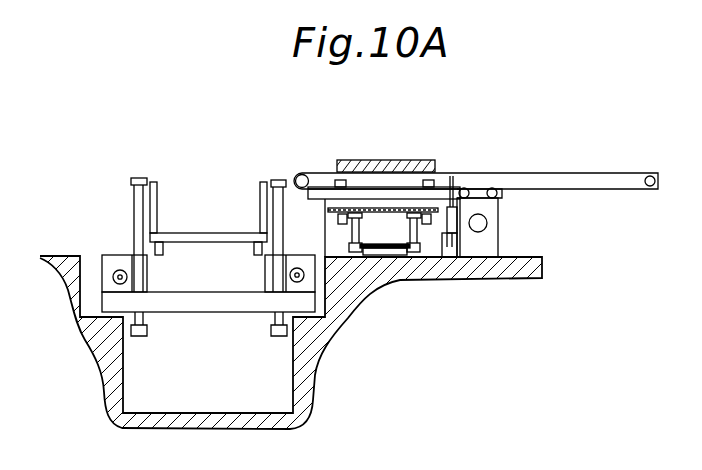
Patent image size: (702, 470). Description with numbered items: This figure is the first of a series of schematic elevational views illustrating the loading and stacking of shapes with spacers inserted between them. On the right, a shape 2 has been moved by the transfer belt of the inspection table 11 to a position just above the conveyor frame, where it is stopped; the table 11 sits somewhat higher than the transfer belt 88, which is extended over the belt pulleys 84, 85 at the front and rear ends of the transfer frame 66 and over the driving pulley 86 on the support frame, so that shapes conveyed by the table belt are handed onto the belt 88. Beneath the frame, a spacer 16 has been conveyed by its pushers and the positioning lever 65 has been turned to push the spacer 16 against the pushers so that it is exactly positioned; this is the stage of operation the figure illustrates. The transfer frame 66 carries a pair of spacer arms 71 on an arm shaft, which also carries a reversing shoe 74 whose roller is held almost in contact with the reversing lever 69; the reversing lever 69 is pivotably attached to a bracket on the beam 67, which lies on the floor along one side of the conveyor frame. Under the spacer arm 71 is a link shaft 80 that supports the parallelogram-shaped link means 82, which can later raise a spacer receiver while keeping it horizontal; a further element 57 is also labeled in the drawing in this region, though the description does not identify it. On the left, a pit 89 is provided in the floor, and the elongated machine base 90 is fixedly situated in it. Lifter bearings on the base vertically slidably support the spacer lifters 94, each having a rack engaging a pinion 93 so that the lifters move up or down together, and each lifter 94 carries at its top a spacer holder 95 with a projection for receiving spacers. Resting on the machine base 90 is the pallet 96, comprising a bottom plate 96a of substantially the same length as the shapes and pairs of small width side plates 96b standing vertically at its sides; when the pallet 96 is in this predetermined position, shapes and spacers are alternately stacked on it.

The shape 2 is at (394, 161).
The inspection table 11 is at (455, 172).
The spacer 16 is at (410, 200).
The bar 57 is at (393, 234).
The positioning lever 65 is at (340, 213).
The transfer frame 66 is at (323, 186).
The beam 67 is at (451, 258).
The reversing lever 69 is at (462, 205).
The spacer arm 71 is at (341, 181).
The reversing shoe 74 is at (453, 207).
The link shaft 80 is at (371, 256).
The parallelogram-shaped link means 82 is at (406, 259).
The belt pulley 84 is at (302, 174).
The belt pulley 85 is at (650, 176).
The driving pulley 86 is at (481, 226).
The transfer belt 88 is at (588, 173).
The pit 89 is at (292, 372).
The machine base 90 is at (212, 312).
The pinion 93 is at (116, 269).
The spacer lifter 94 is at (135, 207).
The spacer holder 95 is at (137, 178).
The pallet 96 is at (208, 191).
The bottom plate 96a is at (192, 240).
The side plate 96b is at (157, 188).